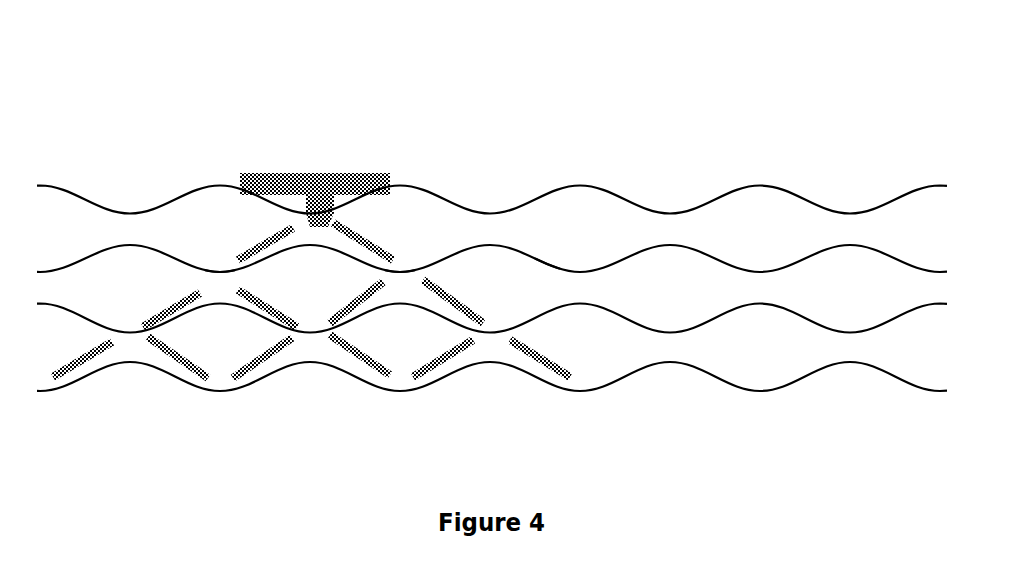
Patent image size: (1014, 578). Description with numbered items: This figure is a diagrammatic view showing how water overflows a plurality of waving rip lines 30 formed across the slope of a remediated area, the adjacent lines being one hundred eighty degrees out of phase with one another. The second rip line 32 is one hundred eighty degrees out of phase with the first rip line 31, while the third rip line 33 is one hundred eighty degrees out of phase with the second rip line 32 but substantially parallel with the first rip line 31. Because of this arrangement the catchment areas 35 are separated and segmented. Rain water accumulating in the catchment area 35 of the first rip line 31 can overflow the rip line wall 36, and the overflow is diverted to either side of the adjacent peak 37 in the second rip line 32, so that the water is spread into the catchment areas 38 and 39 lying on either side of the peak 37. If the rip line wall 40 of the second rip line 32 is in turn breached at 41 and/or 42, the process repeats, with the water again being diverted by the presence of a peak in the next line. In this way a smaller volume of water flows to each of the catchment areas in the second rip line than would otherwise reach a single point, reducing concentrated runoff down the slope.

The waving rip lines 30 is at (838, 92).
The first rip line 31 is at (470, 210).
The second rip line 32 is at (723, 262).
The third rip line 33 is at (568, 310).
The catchment area 35 is at (318, 187).
The rip line wall 36 is at (307, 213).
The peak 37 is at (308, 240).
The catchment area 38 is at (212, 262).
The catchment area 39 is at (395, 260).
The rip line wall 40 is at (548, 260).
The breach point 41 is at (217, 272).
The breach point 42 is at (412, 272).